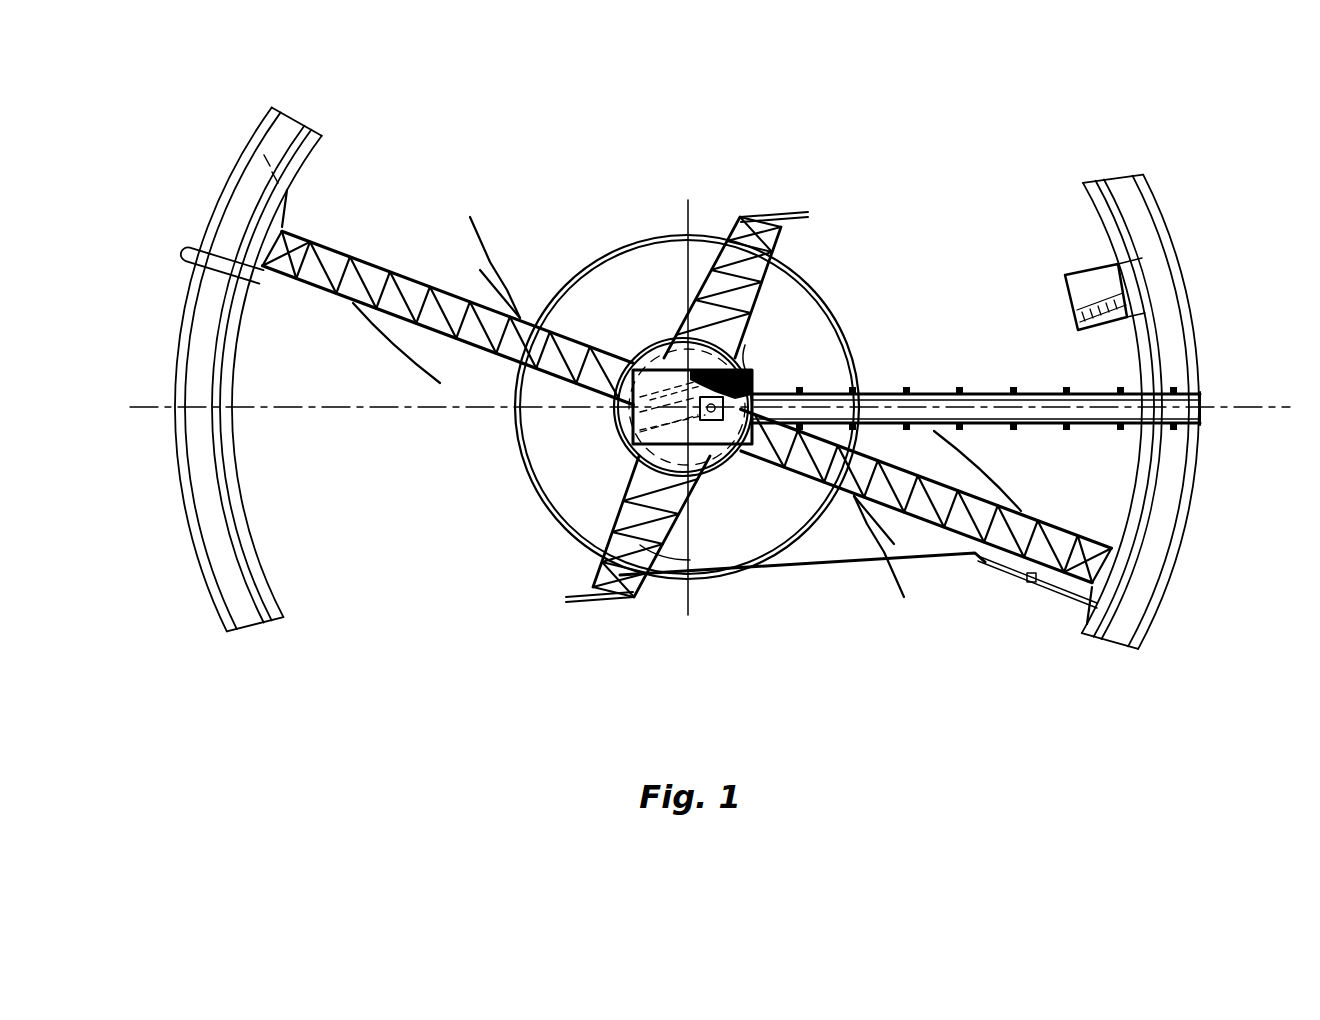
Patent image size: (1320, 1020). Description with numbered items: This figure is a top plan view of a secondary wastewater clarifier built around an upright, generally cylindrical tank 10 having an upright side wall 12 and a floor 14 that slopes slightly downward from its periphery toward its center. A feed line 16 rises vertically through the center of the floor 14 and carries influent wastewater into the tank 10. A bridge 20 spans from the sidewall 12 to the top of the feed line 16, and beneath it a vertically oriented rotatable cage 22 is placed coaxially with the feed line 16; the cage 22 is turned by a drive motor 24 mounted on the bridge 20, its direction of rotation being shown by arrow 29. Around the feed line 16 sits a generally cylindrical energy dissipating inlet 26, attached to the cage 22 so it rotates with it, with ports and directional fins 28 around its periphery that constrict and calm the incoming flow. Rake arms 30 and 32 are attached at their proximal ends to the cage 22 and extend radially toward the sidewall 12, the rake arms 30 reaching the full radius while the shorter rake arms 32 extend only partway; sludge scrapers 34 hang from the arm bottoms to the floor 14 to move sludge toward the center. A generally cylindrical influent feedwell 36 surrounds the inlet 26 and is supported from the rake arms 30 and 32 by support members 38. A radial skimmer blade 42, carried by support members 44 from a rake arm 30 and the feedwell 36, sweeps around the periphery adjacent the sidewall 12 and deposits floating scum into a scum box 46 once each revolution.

The tank 10 is at (138, 355).
The side wall 12 is at (1188, 490).
The floor 14 is at (390, 527).
The feed line 16 is at (600, 441).
The bridge 20 is at (985, 393).
The rotatable cage 22 is at (655, 350).
The drive motor 24 is at (622, 466).
The energy dissipating inlet 26 is at (748, 350).
The ports and directional fins 28 is at (765, 375).
The arrow 29 is at (312, 413).
The rake arms 30 is at (375, 265).
The rake arms 32 is at (765, 220).
The sludge scrapers 34 is at (630, 605).
The influent feedwell 36 is at (853, 335).
The support members 38 is at (668, 553).
The radial skimmer blade 42 is at (1088, 548).
The support members 44 is at (937, 563).
The scum box 46 is at (1098, 287).